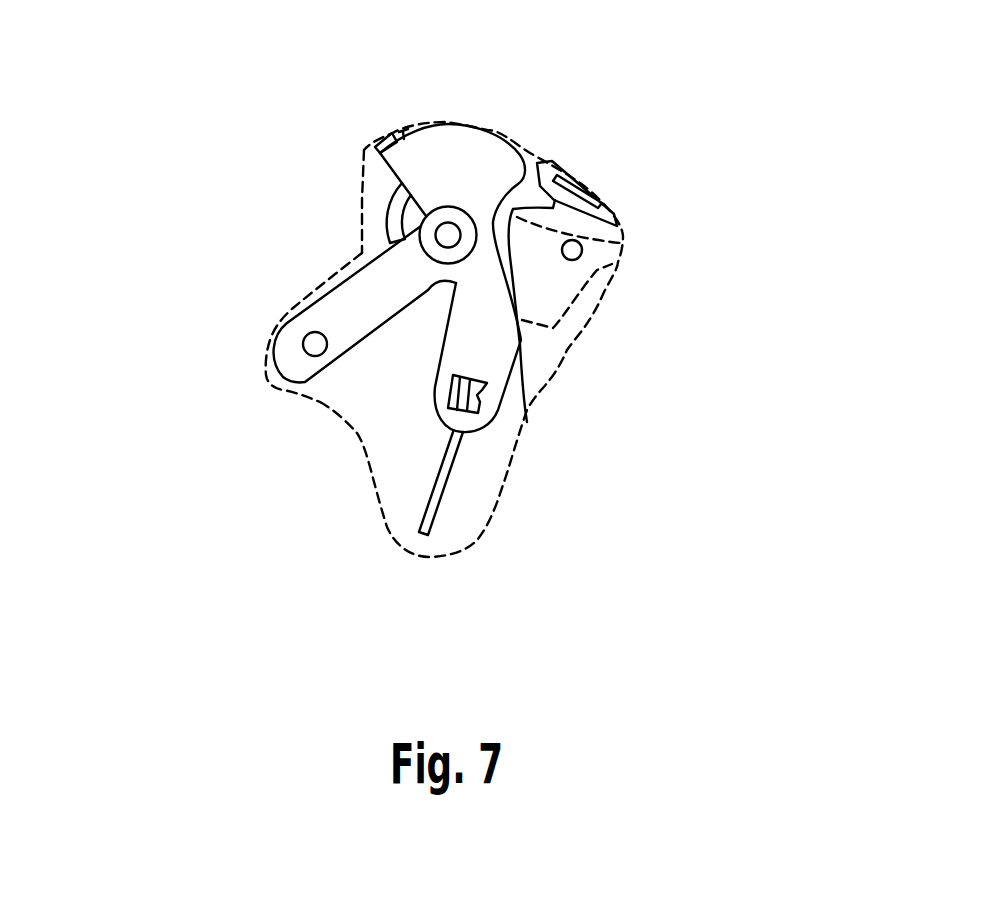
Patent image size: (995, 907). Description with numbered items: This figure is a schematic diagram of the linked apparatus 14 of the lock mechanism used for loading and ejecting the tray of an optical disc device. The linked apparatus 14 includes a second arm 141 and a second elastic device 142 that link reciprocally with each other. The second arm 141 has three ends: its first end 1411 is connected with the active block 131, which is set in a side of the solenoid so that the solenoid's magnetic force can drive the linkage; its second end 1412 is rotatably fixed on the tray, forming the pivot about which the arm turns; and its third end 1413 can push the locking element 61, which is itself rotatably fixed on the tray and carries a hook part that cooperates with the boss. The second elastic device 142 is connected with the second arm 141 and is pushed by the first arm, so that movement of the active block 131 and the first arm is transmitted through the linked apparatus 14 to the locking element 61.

The linked apparatus 14 is at (547, 397).
The locking element 61 is at (580, 308).
The active block 131 is at (270, 380).
The second arm 141 is at (378, 277).
The second elastic device 142 is at (441, 462).
The first end 1411 is at (305, 345).
The second end 1412 is at (448, 235).
The third end 1413 is at (619, 242).